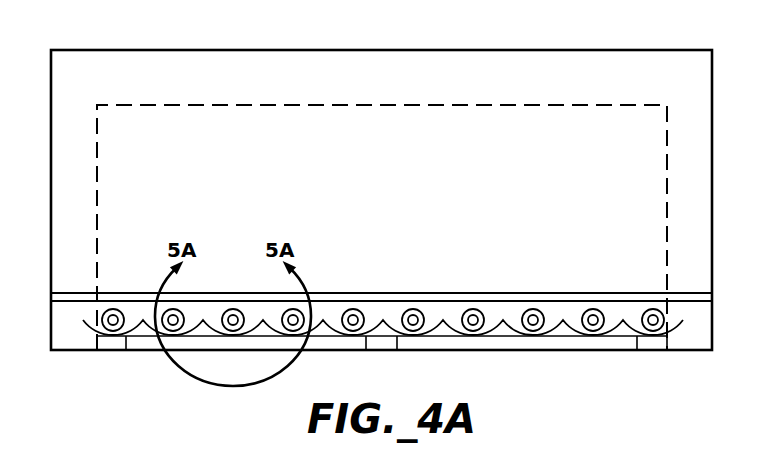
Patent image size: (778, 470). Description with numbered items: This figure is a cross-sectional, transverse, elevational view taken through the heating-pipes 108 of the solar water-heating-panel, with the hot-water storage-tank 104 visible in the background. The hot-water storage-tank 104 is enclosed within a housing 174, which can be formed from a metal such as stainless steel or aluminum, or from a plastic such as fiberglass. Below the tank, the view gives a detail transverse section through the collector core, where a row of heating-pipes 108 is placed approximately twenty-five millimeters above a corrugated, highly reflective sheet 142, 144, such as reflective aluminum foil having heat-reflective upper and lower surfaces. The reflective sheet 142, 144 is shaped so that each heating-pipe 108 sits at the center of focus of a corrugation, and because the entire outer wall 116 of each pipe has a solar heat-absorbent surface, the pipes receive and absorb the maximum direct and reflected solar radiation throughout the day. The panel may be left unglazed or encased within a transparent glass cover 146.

The housing 174 is at (485, 51).
The hot-water storage-tank 104 is at (598, 105).
The transparent glass cover 146 is at (473, 293).
The nozzle 116 is at (352, 310).
The heating-pipe 108 is at (537, 312).
The reflective sheet 142 is at (386, 361).
The fin 144 is at (555, 332).